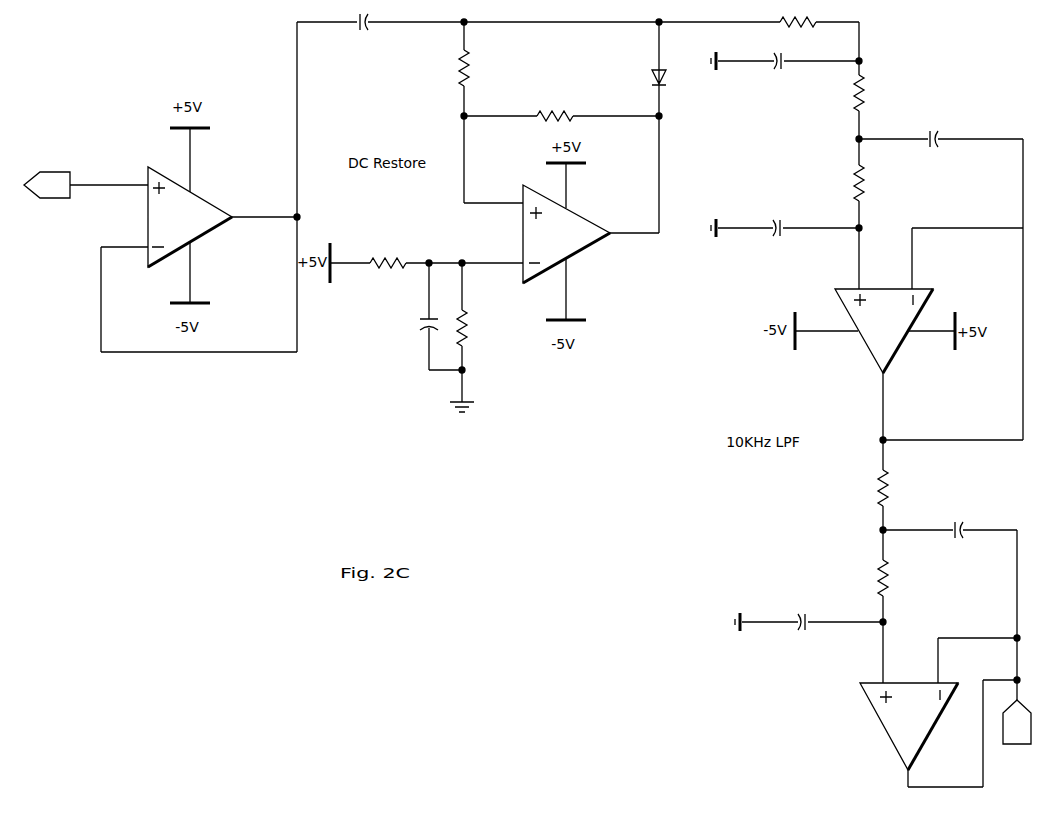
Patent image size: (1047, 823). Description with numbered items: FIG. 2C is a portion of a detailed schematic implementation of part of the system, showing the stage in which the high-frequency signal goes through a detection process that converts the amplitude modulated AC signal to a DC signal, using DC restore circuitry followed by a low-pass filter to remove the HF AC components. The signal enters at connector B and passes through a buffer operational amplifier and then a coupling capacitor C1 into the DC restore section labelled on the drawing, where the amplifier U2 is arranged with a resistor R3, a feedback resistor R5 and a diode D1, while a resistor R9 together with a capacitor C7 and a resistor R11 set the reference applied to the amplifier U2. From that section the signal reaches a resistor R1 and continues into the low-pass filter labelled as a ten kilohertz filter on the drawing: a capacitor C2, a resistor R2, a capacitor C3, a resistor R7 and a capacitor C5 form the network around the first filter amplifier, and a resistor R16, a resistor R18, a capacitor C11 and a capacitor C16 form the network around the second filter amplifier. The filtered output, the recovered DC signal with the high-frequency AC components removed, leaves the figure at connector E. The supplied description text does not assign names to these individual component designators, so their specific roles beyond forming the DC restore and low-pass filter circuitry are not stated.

The input connector B is at (47, 185).
The 0.1 uF coupling capacitor C1 is at (361, 46).
The 4700 ohm resistor R1 is at (838, 29).
The 1000 ohm resistor R3 is at (445, 70).
The 100K ohm feedback resistor R5 is at (556, 95).
The 1N4148 diode D1 is at (685, 127).
The MAX452 DC restore amplifier U2 is at (568, 238).
The 100K ohm resistor R9 is at (386, 240).
The 0.1 uF capacitor C7 is at (408, 316).
The 10K ohm resistor R11 is at (479, 332).
The 6800 pF capacitor C2 is at (776, 83).
The 4700 ohm resistor R2 is at (839, 93).
The 0.01 uF capacitor C3 is at (936, 117).
The 4700 ohm resistor R7 is at (839, 183).
The 1500 pF capacitor C5 is at (773, 248).
The 4700 ohm resistor R16 is at (861, 485).
The 4700 ohm resistor R18 is at (861, 577).
The 0.015 uF capacitor C11 is at (959, 505).
The 680 pF capacitor C16 is at (797, 643).
The output connector E is at (1017, 722).